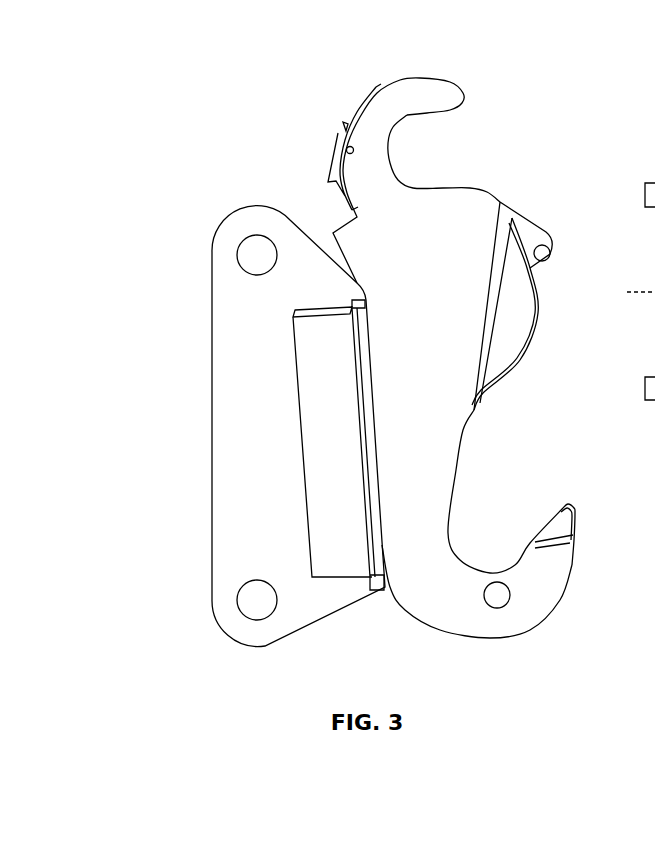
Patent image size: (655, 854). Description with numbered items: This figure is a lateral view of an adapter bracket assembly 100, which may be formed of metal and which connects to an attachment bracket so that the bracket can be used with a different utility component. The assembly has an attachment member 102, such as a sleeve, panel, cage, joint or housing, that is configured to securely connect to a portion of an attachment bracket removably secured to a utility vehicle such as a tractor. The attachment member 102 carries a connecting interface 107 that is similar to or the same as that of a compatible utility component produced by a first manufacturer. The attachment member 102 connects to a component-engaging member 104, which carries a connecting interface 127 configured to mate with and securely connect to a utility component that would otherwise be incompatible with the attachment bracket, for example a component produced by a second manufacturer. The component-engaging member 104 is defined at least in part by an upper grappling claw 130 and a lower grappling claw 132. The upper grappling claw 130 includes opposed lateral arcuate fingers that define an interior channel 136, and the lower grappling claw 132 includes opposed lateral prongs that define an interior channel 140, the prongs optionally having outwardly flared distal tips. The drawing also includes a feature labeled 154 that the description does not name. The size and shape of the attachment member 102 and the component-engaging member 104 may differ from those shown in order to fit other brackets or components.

The adapter bracket assembly 100 is at (243, 140).
The attachment member 102 is at (237, 343).
The connecting interface 107 is at (208, 453).
The upper grappling claw 130 is at (435, 88).
The interior channel 136 is at (428, 153).
The component-engaging member 104 is at (490, 213).
The connecting interface 127 is at (537, 372).
The interior channel 140 is at (485, 537).
The lower grappling claw 132 is at (560, 585).
The stop 154 is at (637, 295).